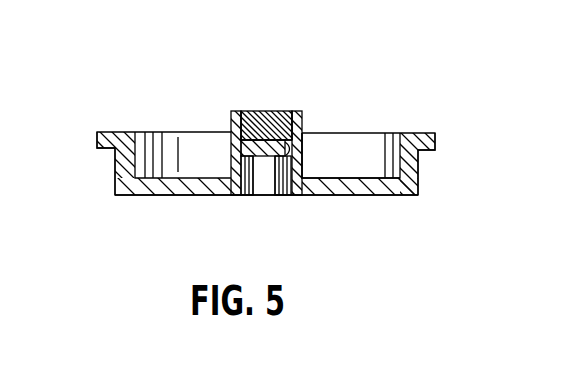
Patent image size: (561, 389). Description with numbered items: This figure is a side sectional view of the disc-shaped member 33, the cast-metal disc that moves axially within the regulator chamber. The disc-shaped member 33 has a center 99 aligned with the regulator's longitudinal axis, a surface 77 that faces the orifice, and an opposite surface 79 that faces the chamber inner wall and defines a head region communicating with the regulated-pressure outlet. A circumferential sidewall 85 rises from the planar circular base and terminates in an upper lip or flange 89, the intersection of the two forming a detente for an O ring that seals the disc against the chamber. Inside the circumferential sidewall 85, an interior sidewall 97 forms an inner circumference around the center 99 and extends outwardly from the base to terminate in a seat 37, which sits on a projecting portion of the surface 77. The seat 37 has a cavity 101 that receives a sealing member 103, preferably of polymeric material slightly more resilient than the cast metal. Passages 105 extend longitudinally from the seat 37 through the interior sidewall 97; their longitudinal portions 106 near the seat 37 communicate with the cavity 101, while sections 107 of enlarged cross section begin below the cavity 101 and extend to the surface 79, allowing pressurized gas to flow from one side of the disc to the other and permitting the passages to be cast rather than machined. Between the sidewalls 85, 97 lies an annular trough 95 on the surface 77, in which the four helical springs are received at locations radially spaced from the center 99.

The disc-shaped member 33 is at (410, 200).
The seat 37 is at (265, 112).
The surface 77 is at (405, 133).
The surface 79 is at (137, 195).
The circumferential sidewall 85 is at (114, 183).
The flange 89 is at (97, 138).
The annular trough 95 is at (370, 176).
The interior sidewall 97 is at (389, 133).
The center 99 is at (258, 184).
The cavity 101 is at (283, 188).
The sealing member 103 is at (272, 111).
The passages 105 is at (242, 111).
The longitudinal portions 106 is at (246, 111).
The sections of enlarged cross section 107 is at (247, 175).